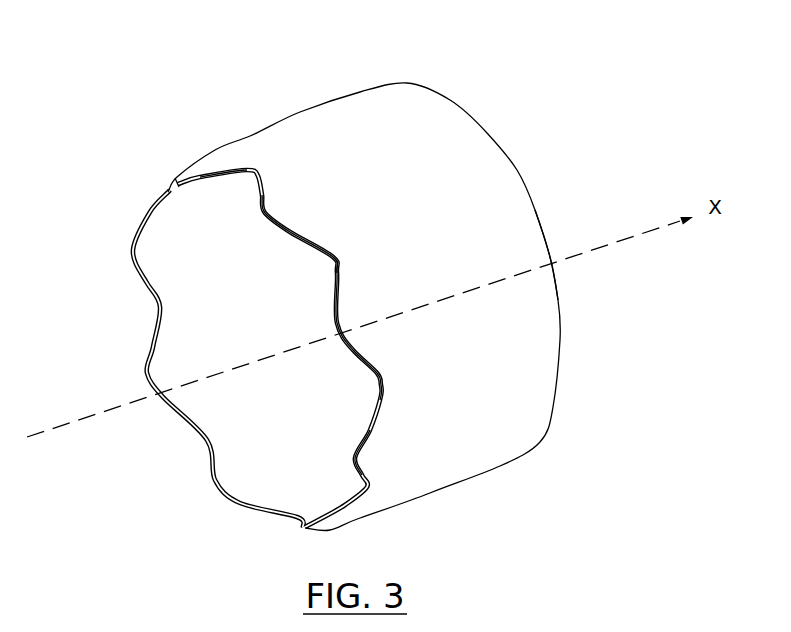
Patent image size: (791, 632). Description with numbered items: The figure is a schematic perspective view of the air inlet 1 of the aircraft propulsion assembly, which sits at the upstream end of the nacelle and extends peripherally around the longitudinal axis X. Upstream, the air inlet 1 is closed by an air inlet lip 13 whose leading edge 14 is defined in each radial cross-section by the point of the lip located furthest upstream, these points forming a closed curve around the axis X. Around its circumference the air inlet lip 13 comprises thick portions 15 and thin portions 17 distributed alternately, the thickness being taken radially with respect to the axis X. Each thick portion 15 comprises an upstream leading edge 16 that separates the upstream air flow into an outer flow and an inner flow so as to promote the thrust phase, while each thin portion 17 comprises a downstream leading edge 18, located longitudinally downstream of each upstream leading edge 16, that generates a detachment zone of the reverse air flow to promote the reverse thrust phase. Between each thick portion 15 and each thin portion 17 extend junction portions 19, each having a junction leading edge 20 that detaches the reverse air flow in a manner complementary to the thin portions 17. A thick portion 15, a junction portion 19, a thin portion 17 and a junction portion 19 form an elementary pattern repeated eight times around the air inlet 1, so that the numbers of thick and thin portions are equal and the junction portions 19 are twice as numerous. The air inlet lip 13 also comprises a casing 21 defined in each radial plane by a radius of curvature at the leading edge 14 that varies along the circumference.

The air inlet 1 is at (522, 117).
The air inlet lip 13 is at (197, 115).
The leading edge 14 is at (165, 203).
The thick portion 15 is at (287, 204).
The upstream leading edge 16 is at (263, 213).
The thin portion 17 is at (342, 249).
The downstream leading edge 18 is at (329, 250).
The junction portion 19 is at (328, 215).
The junction leading edge 20 is at (300, 233).
The casing 21 is at (480, 277).